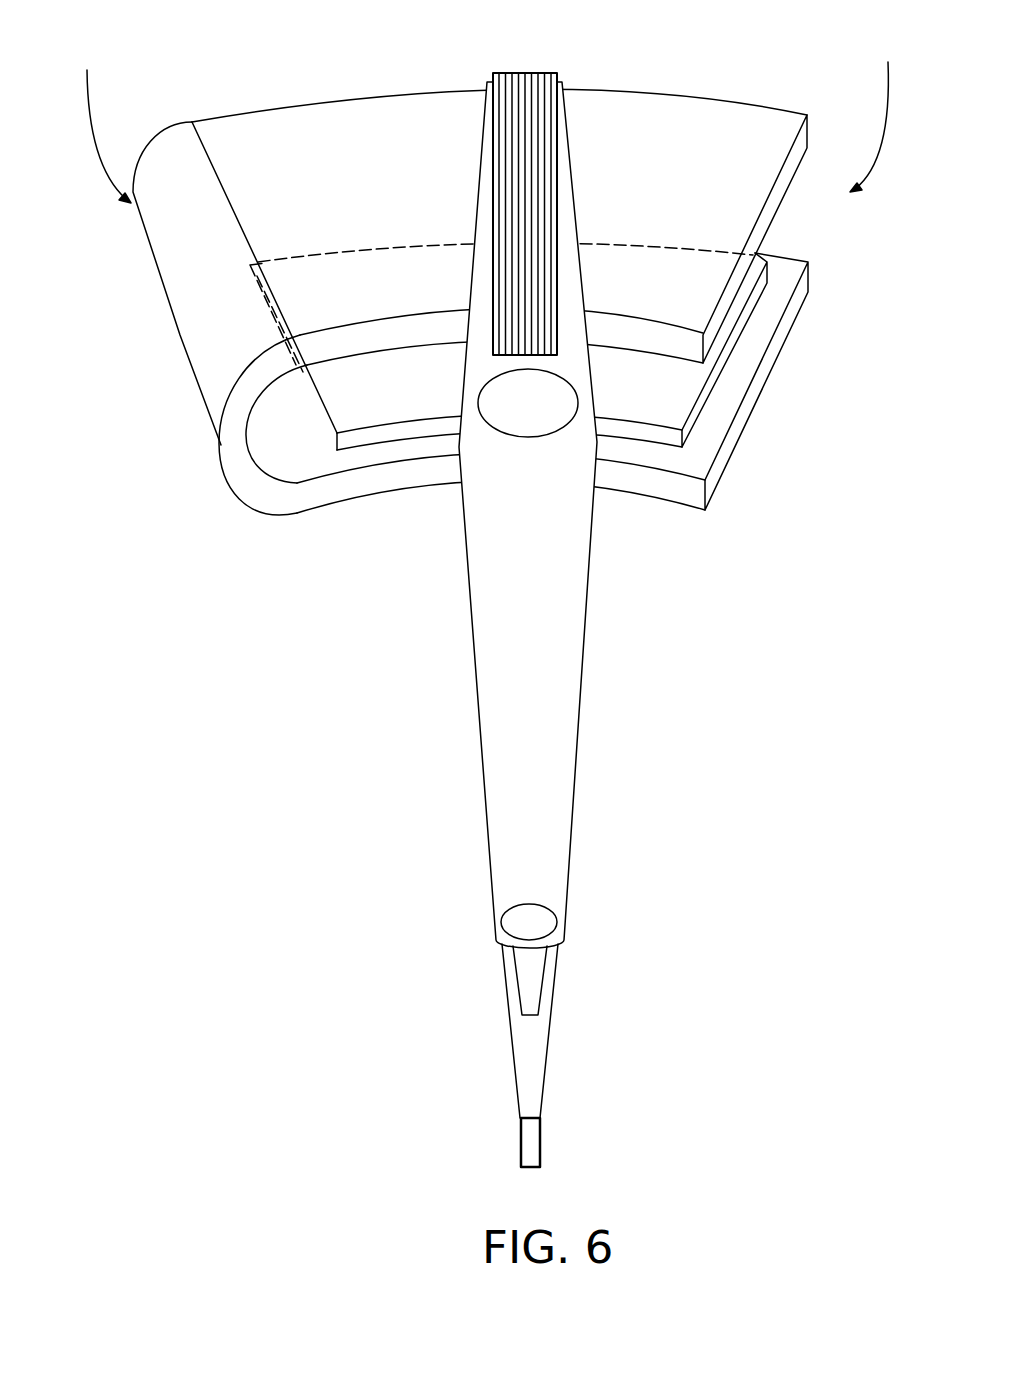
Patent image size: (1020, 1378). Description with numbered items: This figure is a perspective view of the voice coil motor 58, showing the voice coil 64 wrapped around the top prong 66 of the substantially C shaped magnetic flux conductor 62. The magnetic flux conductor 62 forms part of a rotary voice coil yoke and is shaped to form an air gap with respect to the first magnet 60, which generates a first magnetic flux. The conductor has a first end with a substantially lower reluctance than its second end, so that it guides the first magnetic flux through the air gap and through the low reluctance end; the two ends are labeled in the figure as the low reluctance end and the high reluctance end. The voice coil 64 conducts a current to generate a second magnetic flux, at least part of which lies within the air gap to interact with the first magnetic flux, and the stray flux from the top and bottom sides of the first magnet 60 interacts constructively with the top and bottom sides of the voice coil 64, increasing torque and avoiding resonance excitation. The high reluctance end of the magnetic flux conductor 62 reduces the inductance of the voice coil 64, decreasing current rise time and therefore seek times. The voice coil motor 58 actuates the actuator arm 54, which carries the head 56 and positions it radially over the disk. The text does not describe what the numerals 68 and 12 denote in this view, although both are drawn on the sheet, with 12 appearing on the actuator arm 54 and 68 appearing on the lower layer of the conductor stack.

The voice coil motor 58 is at (635, 67).
The magnetic flux conductor 62 is at (793, 161).
The voice coil 64 is at (523, 73).
The top prong 66 is at (687, 365).
The lower slab 68 is at (693, 476).
The first magnet 60 is at (364, 418).
The sensor 12 is at (517, 414).
The actuator arm 54 is at (574, 783).
The head 56 is at (542, 1147).